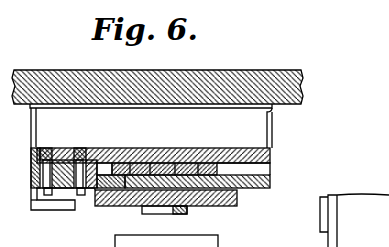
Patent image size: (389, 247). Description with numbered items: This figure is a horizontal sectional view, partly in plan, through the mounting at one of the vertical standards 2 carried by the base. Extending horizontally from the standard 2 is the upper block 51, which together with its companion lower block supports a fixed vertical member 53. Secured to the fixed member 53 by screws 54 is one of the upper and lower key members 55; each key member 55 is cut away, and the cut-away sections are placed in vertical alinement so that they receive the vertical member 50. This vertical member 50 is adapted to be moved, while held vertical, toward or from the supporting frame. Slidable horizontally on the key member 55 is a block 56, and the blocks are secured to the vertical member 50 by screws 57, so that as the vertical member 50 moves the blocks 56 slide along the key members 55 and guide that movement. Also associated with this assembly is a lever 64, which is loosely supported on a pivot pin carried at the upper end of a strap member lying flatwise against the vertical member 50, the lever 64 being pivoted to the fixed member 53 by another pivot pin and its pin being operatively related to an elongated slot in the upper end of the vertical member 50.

The vertical standard 2 is at (245, 76).
The upper block 51 is at (266, 126).
The fixed vertical member 53 is at (162, 150).
The screws 54 is at (80, 148).
The vertical member 50 is at (110, 160).
The key member 55 is at (271, 173).
The block 56 is at (234, 203).
The screws 57 is at (103, 210).
The lever 64 is at (73, 211).